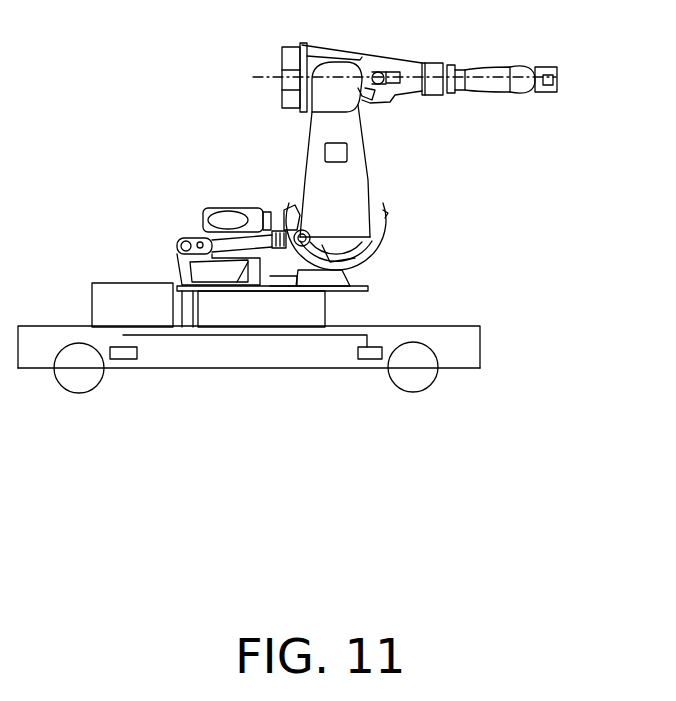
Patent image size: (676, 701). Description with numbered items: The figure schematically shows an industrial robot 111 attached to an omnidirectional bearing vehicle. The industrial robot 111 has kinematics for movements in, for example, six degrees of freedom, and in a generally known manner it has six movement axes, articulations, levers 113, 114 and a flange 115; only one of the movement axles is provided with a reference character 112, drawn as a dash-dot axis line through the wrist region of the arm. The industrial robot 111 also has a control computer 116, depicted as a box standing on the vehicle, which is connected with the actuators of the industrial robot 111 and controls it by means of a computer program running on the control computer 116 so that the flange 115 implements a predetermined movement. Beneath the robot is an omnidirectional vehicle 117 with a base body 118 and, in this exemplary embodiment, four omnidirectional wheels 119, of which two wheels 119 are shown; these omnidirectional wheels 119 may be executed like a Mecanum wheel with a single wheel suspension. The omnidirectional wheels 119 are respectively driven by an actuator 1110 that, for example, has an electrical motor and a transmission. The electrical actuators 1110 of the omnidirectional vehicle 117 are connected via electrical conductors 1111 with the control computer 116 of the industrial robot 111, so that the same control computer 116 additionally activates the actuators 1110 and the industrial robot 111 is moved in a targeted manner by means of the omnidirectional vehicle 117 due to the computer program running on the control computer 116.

The industrial robot 111 is at (307, 158).
The movement axle 112 is at (253, 77).
The lever 113 is at (394, 93).
The lever 114 is at (355, 160).
The flange 115 is at (560, 67).
The control computer 116 is at (121, 357).
The omnidirectional vehicle 117 is at (473, 345).
The base body 118 is at (238, 355).
The omnidirectional wheels 119 is at (79, 370).
The actuator 1110 is at (128, 360).
The electrical conductors 1111 is at (345, 335).